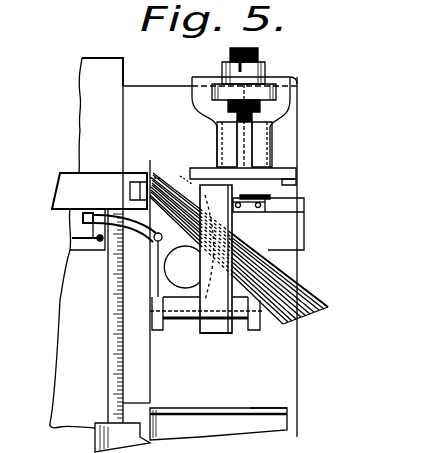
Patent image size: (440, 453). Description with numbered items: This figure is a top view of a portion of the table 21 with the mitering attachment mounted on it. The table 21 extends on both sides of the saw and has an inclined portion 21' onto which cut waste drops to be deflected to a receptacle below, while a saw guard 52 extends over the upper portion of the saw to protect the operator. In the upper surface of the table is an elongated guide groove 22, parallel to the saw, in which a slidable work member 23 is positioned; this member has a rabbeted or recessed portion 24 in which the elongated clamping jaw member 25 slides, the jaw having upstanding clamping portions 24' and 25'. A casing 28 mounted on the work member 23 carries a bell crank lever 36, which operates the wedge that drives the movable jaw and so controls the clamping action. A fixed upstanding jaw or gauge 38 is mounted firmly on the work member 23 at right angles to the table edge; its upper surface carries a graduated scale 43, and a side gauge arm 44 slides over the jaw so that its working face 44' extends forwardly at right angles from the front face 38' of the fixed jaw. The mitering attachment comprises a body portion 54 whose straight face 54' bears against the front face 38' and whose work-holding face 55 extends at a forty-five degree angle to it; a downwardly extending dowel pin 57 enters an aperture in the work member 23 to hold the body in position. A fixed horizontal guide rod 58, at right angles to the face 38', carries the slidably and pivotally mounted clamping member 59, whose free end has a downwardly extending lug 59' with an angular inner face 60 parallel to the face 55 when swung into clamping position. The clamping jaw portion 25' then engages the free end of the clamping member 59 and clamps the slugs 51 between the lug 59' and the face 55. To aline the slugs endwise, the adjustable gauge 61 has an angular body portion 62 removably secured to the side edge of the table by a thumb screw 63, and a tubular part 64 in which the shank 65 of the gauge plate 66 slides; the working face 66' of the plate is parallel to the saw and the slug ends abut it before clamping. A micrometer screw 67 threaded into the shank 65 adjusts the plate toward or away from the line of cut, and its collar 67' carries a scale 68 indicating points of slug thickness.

The table 21 is at (58, 279).
The inclined portion 21' is at (135, 85).
The guide groove 22 is at (88, 250).
The slidable work member 23 is at (287, 237).
The recessed portion 24 is at (305, 213).
The upstanding clamping portion 24' is at (250, 216).
The clamping jaw member 25 is at (302, 196).
The clamping jaw portion 25' is at (249, 192).
The casing 28 is at (72, 238).
The bell crank lever 36 is at (163, 238).
The fixed jaw 38 is at (114, 254).
The front face 38' is at (223, 257).
The graduated scale 43 is at (118, 389).
The side gauge arm 44 is at (218, 430).
The working face 44' is at (265, 398).
The slugs 51 is at (322, 311).
The saw guard 52 is at (68, 190).
The body portion 54 is at (221, 259).
The straight face 54' is at (113, 281).
The work-holding face 55 is at (293, 278).
The dowel pin 57 is at (182, 267).
The guide rod 58 is at (183, 325).
The clamping member 59 is at (226, 349).
The lug 59' is at (182, 164).
The angular inner face 60 is at (164, 176).
The adjustable gauge 61 is at (298, 150).
The angular body portion 62 is at (286, 112).
The thumb screw 63 is at (218, 76).
The tubular part 64 is at (215, 143).
The shank 65 is at (273, 143).
The gauge plate 66 is at (264, 157).
The working face 66' is at (316, 174).
The micrometer screw 67 is at (278, 87).
The collar 67' is at (266, 65).
The scale 68 is at (196, 76).